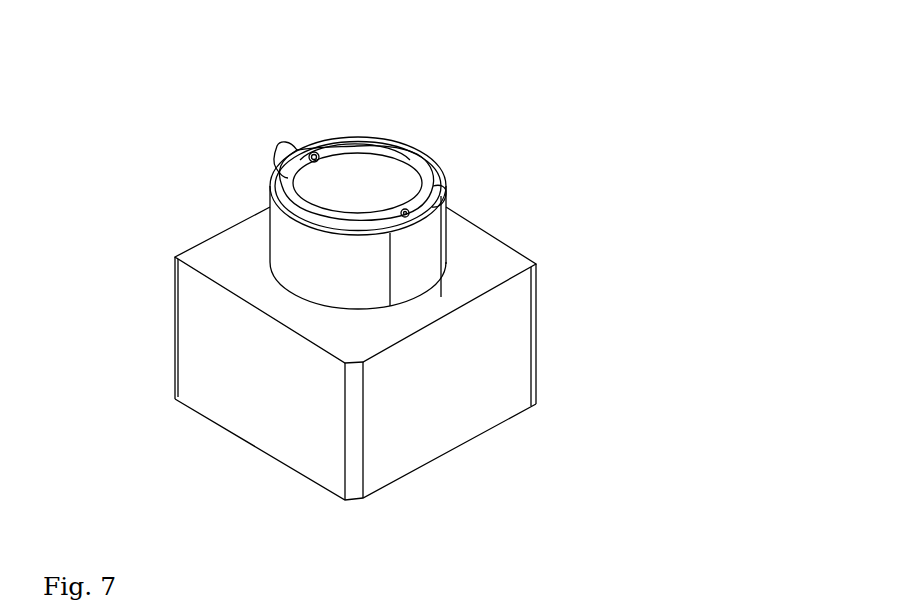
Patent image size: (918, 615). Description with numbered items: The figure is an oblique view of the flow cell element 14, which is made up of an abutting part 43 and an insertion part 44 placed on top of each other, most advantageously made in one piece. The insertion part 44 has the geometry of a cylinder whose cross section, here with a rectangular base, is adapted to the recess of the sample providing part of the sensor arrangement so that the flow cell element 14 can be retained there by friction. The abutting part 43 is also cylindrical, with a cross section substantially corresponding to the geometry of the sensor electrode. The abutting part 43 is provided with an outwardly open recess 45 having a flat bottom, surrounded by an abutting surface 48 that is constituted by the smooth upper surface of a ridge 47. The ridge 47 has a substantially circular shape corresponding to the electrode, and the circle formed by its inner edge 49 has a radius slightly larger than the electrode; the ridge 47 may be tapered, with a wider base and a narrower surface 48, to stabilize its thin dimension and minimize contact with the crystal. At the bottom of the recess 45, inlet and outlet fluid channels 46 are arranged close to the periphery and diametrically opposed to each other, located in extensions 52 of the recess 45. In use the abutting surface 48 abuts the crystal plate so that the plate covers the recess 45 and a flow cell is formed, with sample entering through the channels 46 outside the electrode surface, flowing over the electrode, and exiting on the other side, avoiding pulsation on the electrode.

The flow cell element 14 is at (618, 321).
The abutting part 43 is at (295, 242).
The insertion part 44 is at (483, 378).
The recess 45 is at (342, 187).
The inlet and outlet fluid channels 46 is at (405, 213).
The ridge 47 is at (277, 200).
The abutting surface 48 is at (433, 175).
The inner edge 49 is at (418, 165).
The extensions 52 is at (402, 213).